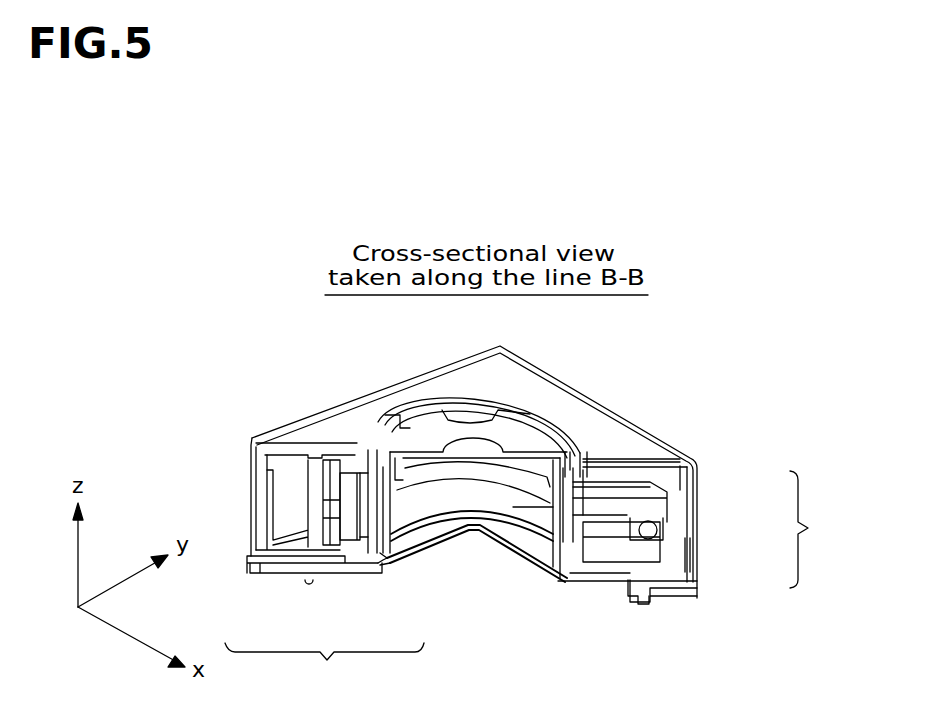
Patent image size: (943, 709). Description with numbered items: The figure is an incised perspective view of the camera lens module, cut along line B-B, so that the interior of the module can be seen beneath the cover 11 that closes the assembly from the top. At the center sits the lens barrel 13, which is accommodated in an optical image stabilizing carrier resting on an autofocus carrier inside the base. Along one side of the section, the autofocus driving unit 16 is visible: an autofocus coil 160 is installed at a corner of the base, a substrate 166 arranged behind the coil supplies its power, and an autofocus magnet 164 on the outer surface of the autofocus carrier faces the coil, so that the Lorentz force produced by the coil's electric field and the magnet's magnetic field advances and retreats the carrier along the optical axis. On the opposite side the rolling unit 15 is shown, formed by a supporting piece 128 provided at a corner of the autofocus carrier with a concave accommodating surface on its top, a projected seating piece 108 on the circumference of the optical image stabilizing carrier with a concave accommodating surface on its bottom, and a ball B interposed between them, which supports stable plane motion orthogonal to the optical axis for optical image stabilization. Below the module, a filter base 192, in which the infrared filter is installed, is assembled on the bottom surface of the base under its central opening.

The cover 11 is at (315, 428).
The lens barrel 13 is at (443, 430).
The rolling unit 15 is at (817, 529).
The autofocus driving unit 16 is at (324, 670).
The seating piece 108 is at (660, 505).
The ball B is at (667, 540).
The supporting piece 128 is at (653, 548).
The autofocus coil 160 is at (342, 538).
The autofocus magnet 164 is at (352, 528).
The substrate 166 is at (332, 524).
The filter base 192 is at (637, 588).